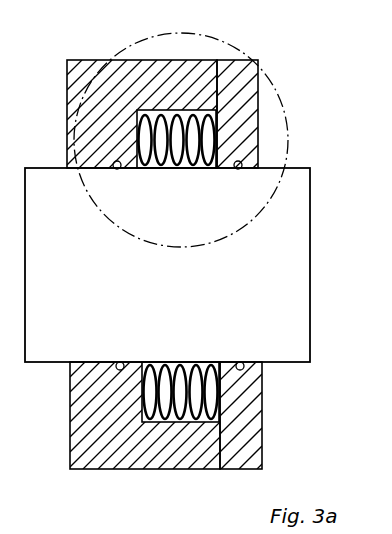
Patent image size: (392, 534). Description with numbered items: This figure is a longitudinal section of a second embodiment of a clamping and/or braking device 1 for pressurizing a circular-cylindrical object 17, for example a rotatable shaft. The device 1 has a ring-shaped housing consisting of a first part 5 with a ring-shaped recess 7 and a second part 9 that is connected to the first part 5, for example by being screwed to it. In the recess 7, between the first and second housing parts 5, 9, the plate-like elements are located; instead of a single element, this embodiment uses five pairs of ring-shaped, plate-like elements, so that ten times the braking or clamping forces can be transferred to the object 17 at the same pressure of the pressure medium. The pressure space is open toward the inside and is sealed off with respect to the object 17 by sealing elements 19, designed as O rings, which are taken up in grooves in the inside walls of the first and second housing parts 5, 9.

The clamping and/or braking device 1 is at (306, 96).
The first part 5 is at (72, 78).
The ring-shaped recess 7 is at (216, 400).
The second part 9 is at (246, 73).
The object 17 is at (308, 281).
The sealing elements 19 is at (119, 170).